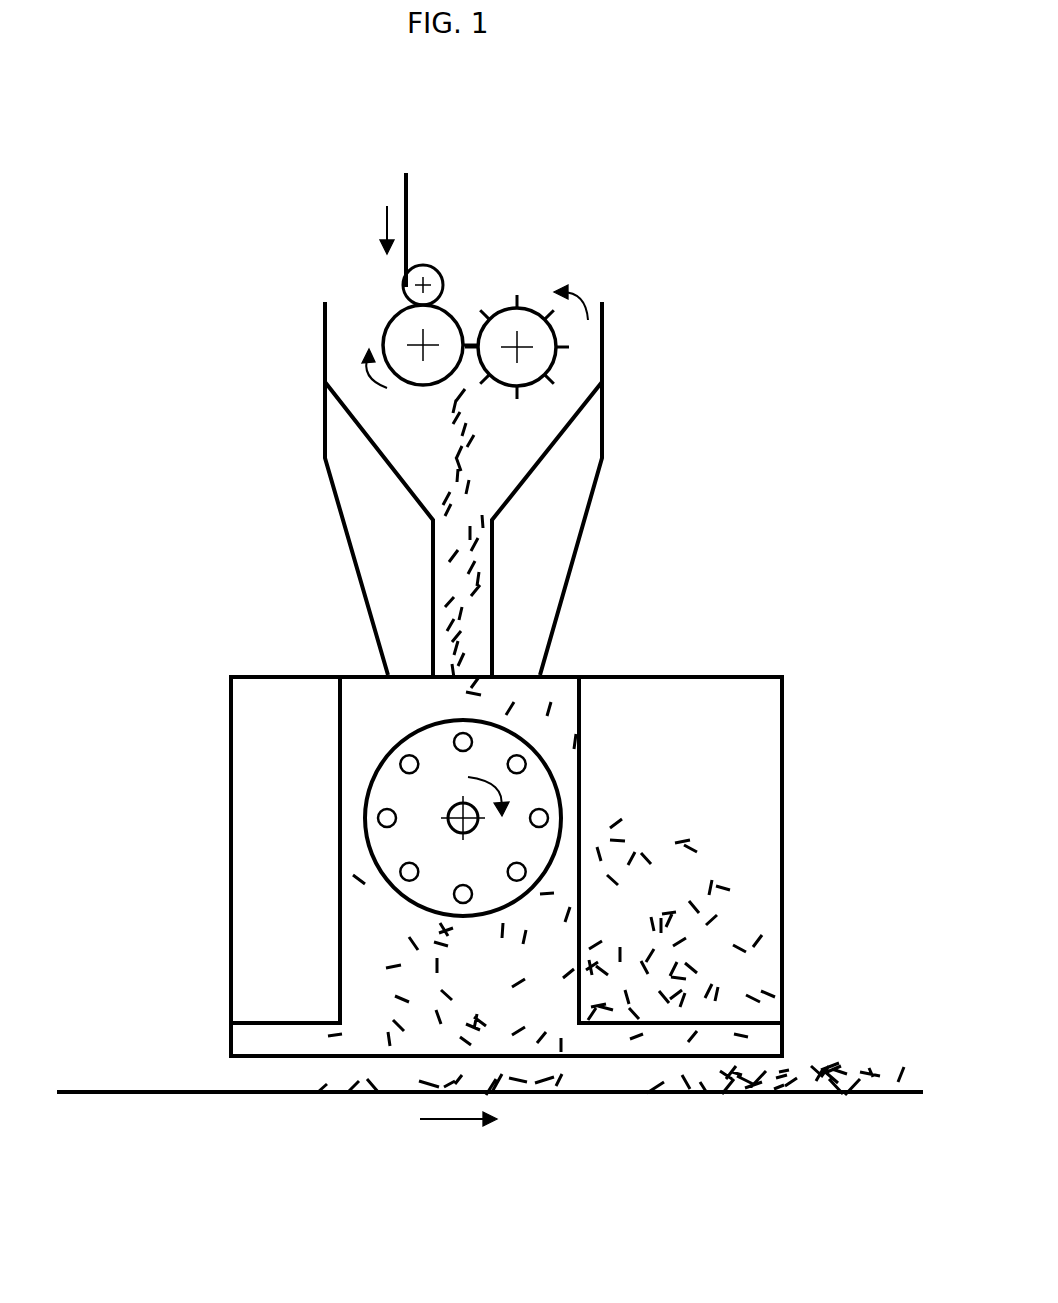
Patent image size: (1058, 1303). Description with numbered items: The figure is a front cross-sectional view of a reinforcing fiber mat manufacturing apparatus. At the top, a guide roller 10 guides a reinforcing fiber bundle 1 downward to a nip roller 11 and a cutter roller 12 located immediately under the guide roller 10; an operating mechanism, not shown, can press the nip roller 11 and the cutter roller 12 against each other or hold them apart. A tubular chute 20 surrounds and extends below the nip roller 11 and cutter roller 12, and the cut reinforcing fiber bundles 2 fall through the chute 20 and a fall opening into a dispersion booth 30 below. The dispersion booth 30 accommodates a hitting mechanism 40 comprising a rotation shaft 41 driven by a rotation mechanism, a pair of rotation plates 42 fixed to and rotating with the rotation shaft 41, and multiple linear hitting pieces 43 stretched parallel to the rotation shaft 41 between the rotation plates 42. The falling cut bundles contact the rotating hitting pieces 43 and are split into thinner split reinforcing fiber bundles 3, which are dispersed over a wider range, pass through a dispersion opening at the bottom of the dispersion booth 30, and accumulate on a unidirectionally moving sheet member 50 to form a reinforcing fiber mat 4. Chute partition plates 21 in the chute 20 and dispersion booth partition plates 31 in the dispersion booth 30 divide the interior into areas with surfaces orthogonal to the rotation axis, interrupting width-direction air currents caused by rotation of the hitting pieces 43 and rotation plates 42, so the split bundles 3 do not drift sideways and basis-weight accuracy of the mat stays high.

The reinforcing fiber bundle 1 is at (407, 221).
The guide roller 10 is at (443, 278).
The nip roller 11 is at (393, 317).
The cutter roller 12 is at (553, 357).
The chute 20 is at (342, 488).
The chute partition plates 21 is at (375, 528).
The cut reinforcing fiber bundles 2 is at (472, 467).
The dispersion booth 30 is at (409, 835).
The dispersion booth partition plates 31 is at (277, 972).
The hitting mechanism 40 is at (294, 843).
The rotation shaft 41 is at (453, 803).
The rotation plates 42 is at (397, 853).
The hitting pieces 43 is at (388, 817).
The split reinforcing fiber bundles 3 is at (650, 835).
The reinforcing fiber mat 4 is at (845, 1065).
The sheet member 50 is at (230, 1093).